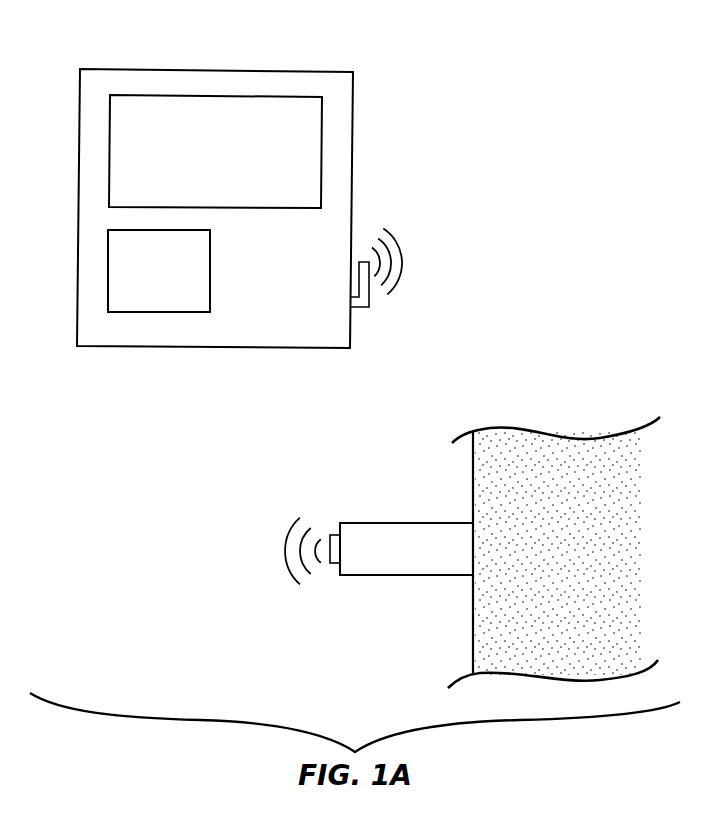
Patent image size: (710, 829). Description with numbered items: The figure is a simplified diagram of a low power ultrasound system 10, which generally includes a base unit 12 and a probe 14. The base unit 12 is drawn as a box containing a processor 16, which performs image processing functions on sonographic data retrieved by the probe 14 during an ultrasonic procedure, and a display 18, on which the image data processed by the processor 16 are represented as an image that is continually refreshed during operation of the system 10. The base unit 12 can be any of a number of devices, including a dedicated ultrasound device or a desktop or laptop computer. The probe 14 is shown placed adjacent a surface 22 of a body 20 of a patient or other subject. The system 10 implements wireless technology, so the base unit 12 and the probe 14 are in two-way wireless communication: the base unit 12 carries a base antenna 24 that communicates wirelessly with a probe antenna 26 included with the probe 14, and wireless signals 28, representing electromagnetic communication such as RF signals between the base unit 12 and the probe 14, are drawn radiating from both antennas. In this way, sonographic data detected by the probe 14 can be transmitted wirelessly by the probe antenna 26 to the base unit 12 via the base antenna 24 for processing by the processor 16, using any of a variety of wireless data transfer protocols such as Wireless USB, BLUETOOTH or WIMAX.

The low power ultrasound system 10 is at (511, 176).
The base unit 12 is at (145, 67).
The probe 14 is at (393, 522).
The processor 16 is at (157, 302).
The display 18 is at (315, 152).
The body 20 is at (552, 448).
The surface 22 is at (473, 468).
The base antenna 24 is at (370, 297).
The probe antenna 26 is at (335, 567).
The wireless signals 28 is at (405, 250).